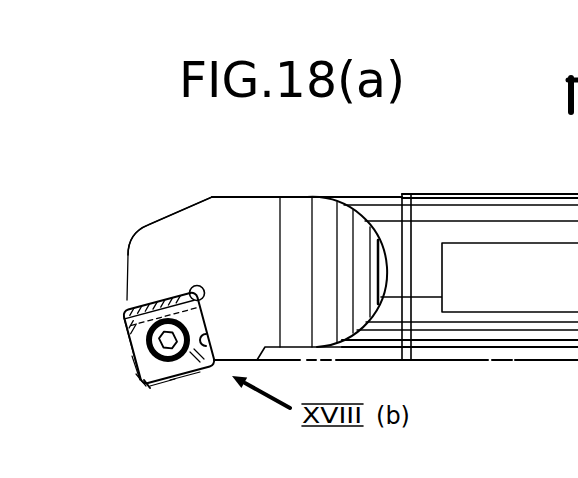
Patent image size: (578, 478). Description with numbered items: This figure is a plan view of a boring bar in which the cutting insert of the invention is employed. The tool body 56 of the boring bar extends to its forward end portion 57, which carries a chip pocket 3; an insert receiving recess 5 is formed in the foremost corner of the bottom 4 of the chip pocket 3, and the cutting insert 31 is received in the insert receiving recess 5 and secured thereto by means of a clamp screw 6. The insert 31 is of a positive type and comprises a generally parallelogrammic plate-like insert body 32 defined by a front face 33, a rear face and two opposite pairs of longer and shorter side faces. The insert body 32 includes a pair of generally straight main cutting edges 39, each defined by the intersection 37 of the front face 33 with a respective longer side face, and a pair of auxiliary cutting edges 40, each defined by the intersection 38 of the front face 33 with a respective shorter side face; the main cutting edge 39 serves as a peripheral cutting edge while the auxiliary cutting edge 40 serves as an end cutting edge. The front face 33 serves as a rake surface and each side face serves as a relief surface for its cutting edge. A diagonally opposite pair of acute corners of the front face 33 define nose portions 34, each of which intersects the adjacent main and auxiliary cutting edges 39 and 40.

The chip pocket 3 is at (327, 233).
The bottom of the chip pocket 4 is at (257, 213).
The insert receiving recess 5 is at (208, 328).
The clamp screw 6 is at (162, 302).
The cutting insert 31 is at (168, 257).
The insert body 32 is at (132, 340).
The front face 33 is at (197, 372).
The nose portions 34 is at (203, 288).
The intersection of the front face with a longer side face 37 is at (170, 387).
The intersection of the front face with a shorter side face 38 is at (132, 358).
The main cutting edges 39 is at (157, 388).
The auxiliary cutting edges 40 is at (135, 378).
The tool body of the boring bar 56 is at (482, 205).
The forward end portion 57 is at (249, 183).